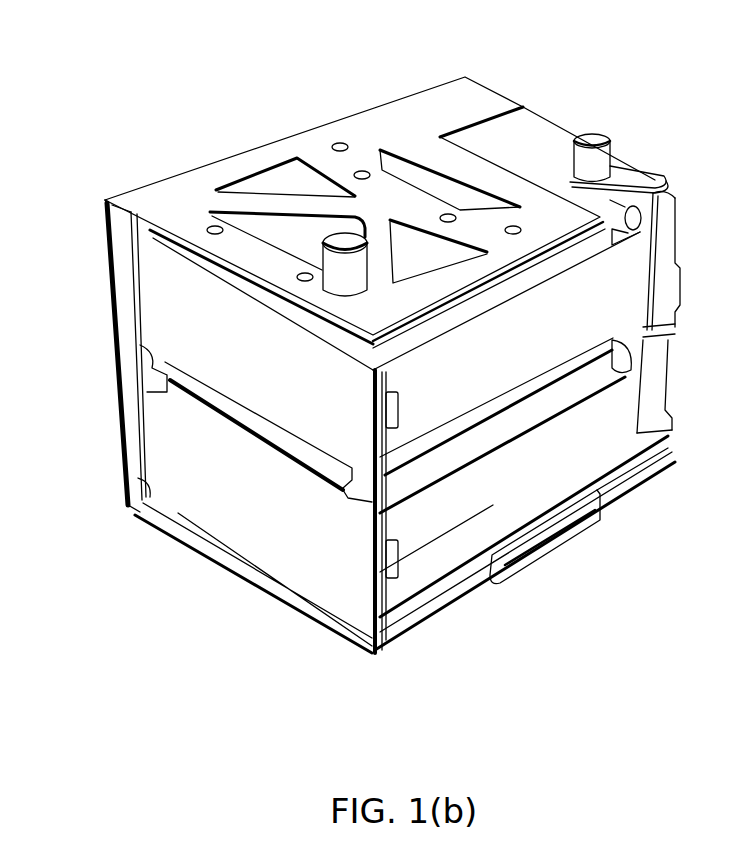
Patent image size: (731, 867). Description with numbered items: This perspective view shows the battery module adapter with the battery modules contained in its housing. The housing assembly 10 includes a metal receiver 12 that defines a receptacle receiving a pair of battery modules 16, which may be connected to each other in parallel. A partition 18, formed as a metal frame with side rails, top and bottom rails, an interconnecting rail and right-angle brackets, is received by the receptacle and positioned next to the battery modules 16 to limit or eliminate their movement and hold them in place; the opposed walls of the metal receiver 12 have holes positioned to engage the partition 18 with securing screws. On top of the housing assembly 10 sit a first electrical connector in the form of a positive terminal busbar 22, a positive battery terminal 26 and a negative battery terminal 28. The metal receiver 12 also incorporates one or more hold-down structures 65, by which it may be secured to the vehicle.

The housing assembly 10 is at (238, 149).
The metal receiver 12 is at (470, 97).
The battery modules 16 is at (432, 426).
The partition 18 is at (195, 400).
The positive terminal busbar 22 is at (656, 178).
The positive battery terminal 26 is at (598, 135).
The negative battery terminal 28 is at (345, 233).
The hold-down structures 65 is at (568, 527).